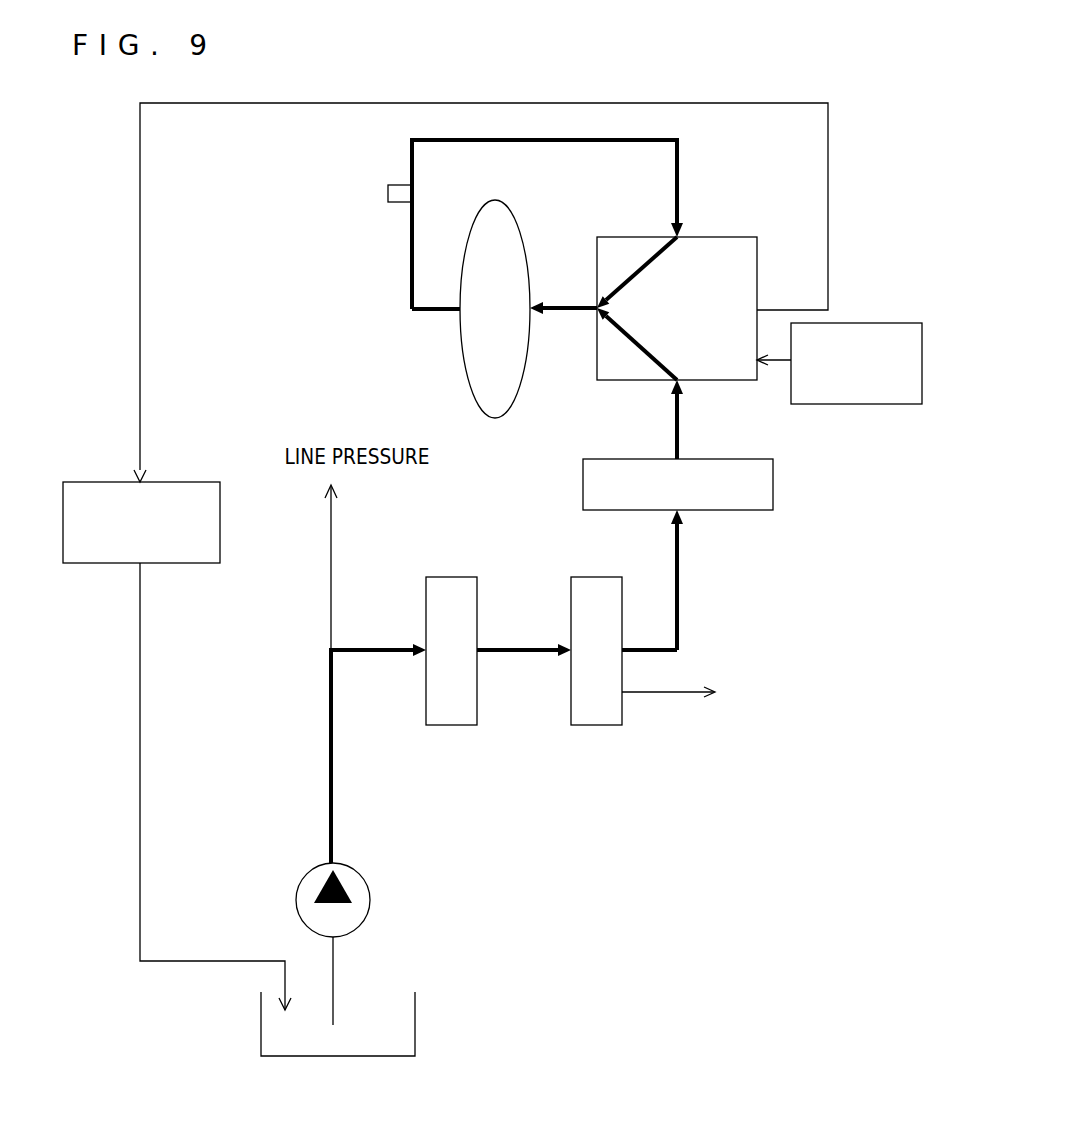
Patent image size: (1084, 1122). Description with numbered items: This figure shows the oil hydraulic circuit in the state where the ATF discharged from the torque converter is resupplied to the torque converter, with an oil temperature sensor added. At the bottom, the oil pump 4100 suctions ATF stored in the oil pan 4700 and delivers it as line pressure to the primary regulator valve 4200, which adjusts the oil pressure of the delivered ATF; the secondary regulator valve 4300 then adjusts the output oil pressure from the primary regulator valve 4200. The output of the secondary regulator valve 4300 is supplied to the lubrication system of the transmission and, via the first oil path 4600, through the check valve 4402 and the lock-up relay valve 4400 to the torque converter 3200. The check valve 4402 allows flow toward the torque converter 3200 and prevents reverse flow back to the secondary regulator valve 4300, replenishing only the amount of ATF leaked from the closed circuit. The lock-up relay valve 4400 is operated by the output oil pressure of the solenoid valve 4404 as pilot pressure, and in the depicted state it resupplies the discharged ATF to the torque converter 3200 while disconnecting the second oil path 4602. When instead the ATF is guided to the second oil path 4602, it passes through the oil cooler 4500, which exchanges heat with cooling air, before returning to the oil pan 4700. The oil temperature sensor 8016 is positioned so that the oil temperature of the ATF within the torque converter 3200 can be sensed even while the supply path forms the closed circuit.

The torque converter 3200 is at (460, 361).
The oil pump 4100 is at (370, 900).
The primary regulator valve 4200 is at (450, 725).
The secondary regulator valve 4300 is at (600, 725).
The lock-up relay valve 4400 is at (740, 382).
The check valve 4402 is at (583, 491).
The solenoid valve 4404 is at (862, 404).
The oil cooler 4500 is at (200, 563).
The first oil path 4600 is at (677, 575).
The second oil path 4602 is at (828, 207).
The oil pan 4700 is at (415, 1012).
The oil temperature sensor 8016 is at (388, 194).